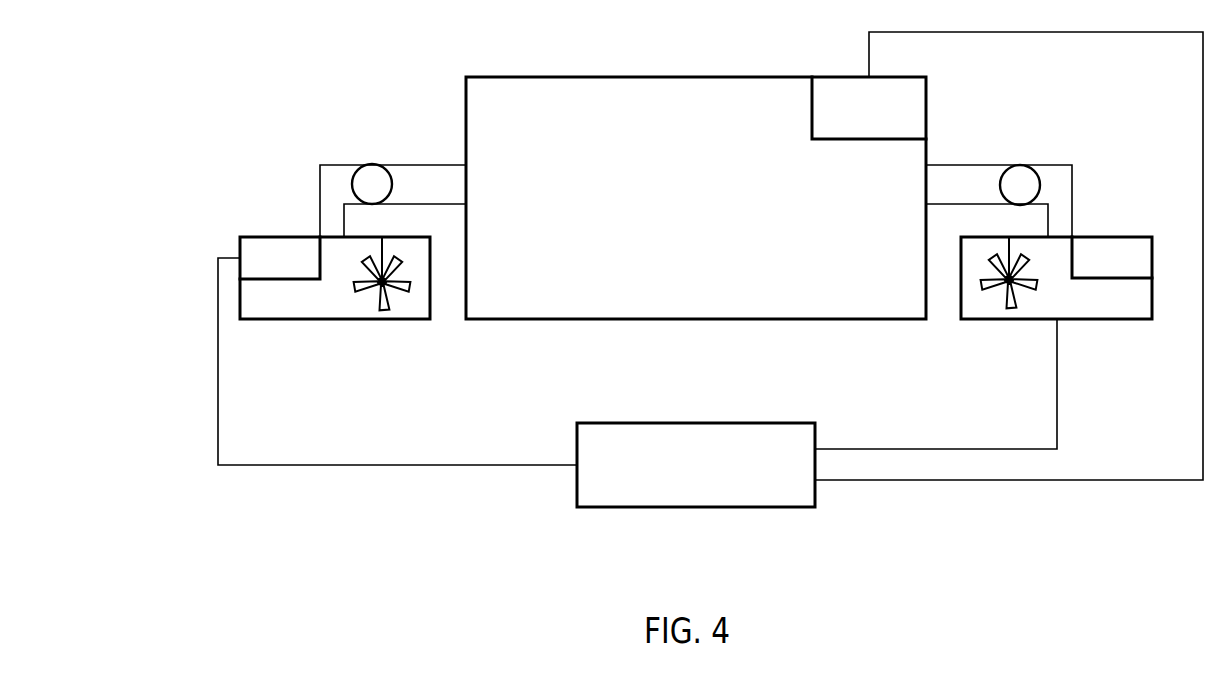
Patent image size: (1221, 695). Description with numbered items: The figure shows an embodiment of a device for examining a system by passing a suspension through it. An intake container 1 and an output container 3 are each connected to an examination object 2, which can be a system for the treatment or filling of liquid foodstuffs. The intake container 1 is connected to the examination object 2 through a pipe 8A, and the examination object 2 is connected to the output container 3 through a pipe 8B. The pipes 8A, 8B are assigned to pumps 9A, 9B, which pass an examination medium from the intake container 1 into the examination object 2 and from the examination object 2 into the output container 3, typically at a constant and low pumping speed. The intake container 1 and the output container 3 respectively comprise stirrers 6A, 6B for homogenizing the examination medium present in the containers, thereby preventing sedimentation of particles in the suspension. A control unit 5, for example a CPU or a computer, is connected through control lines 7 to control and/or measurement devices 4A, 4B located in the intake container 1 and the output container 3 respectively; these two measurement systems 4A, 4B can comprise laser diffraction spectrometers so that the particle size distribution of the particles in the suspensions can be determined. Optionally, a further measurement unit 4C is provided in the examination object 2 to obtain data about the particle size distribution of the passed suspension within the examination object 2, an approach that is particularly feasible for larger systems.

The intake container 1 is at (280, 236).
The examination object 2 is at (683, 76).
The output container 3 is at (1112, 236).
The control and/or measurement device 4A is at (265, 272).
The control and/or measurement device 4B is at (1097, 272).
The measurement unit 4C is at (854, 121).
The control unit 5 is at (797, 508).
The stirrer 6A is at (377, 302).
The stirrer 6B is at (1016, 300).
The control lines 7 is at (358, 466).
The pipe 8A is at (392, 164).
The pipe 8B is at (1000, 164).
The pump 9A is at (355, 166).
The pump 9B is at (1042, 166).